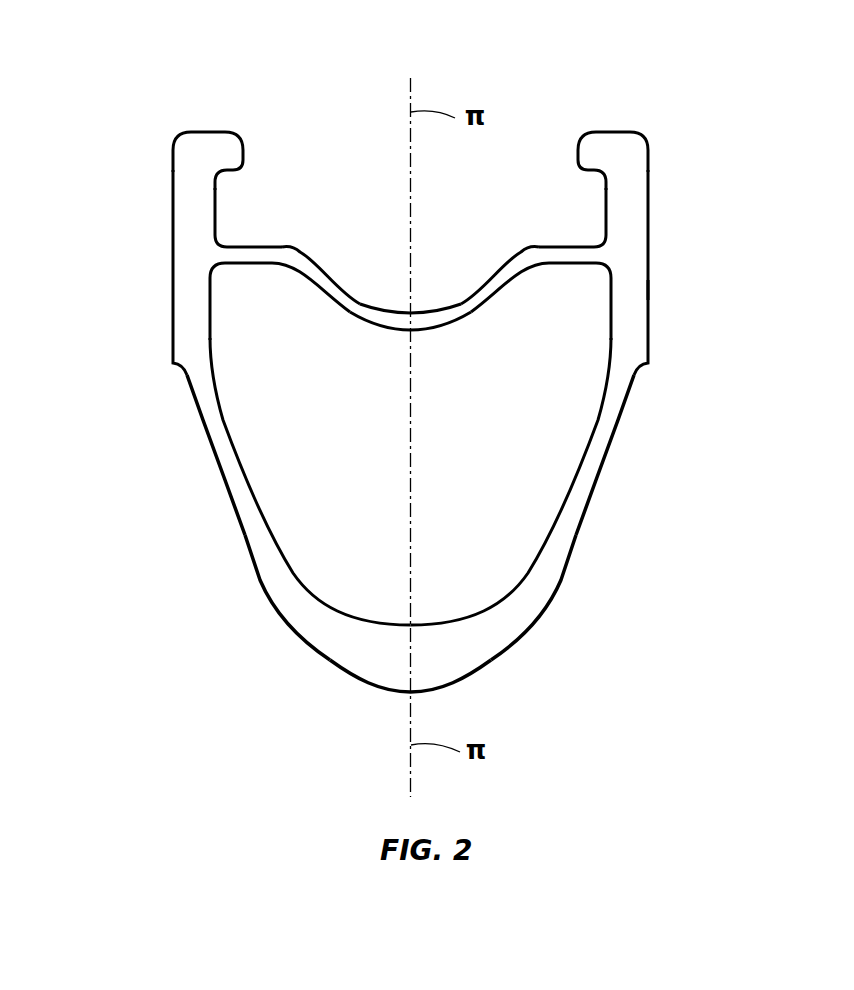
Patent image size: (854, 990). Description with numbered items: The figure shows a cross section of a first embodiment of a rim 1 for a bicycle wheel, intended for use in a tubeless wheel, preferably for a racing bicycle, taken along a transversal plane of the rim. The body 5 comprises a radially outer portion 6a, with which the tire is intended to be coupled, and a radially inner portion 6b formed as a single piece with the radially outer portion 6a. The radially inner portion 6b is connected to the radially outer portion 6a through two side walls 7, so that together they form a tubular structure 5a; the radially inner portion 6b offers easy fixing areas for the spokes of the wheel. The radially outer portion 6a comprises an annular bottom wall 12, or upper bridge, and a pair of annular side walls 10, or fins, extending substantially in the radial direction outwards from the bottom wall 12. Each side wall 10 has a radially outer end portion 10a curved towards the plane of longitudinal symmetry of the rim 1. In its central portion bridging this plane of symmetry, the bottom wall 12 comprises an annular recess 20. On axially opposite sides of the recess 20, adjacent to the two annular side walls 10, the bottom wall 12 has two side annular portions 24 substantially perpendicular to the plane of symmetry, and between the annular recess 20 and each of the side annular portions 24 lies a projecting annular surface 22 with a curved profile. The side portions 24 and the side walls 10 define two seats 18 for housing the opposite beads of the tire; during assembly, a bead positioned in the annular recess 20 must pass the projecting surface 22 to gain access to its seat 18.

The rim 1 is at (190, 90).
The body 5 is at (568, 562).
The tubular structure 5a is at (478, 406).
The radially outer portion 6a is at (683, 274).
The radially inner portion 6b is at (540, 660).
The side walls 7 is at (215, 465).
The annular side walls 10 is at (188, 222).
The radially outer end portion 10a is at (195, 152).
The annular bottom wall 12 is at (380, 326).
The seats 18 is at (237, 221).
The annular recess 20 is at (434, 259).
The projecting annular surface 22 is at (290, 245).
The side annular portions 24 is at (258, 245).